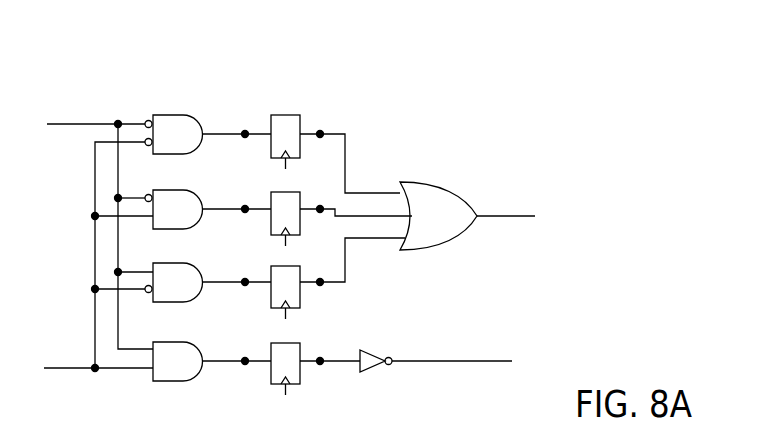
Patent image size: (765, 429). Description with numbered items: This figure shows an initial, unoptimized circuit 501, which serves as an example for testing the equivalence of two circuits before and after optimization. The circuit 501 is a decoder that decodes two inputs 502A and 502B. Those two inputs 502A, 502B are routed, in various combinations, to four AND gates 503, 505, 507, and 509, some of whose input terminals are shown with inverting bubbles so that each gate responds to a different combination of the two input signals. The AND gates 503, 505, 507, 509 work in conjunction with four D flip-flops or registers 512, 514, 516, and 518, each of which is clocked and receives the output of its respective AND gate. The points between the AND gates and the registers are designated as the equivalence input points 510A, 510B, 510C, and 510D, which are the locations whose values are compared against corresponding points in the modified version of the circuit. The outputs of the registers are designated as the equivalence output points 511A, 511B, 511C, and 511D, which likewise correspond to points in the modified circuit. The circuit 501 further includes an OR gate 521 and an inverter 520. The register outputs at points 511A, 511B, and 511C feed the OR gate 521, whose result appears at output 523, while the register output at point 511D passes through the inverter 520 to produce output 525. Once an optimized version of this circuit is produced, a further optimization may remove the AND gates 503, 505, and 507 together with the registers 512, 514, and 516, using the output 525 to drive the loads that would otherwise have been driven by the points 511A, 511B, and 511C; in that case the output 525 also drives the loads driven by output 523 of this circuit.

The circuit 501 is at (404, 68).
The input 502A is at (70, 370).
The input 502B is at (63, 124).
The AND gate 503 is at (194, 143).
The AND gate 505 is at (194, 218).
The AND gate 507 is at (194, 291).
The AND gate 509 is at (194, 370).
The equivalence input point 510A is at (245, 131).
The equivalence input point 510B is at (247, 206).
The equivalence input point 510C is at (247, 279).
The equivalence input point 510D is at (247, 358).
The equivalence output point 511A is at (321, 131).
The equivalence output point 511B is at (323, 196).
The equivalence output point 511C is at (321, 285).
The equivalence output point 511D is at (321, 364).
The D flip-flop 512 is at (271, 154).
The D flip-flop 514 is at (271, 231).
The D flip-flop 516 is at (271, 305).
The D flip-flop 518 is at (271, 380).
The inverter 520 is at (388, 357).
The OR gate 521 is at (455, 191).
The output 523 is at (516, 214).
The output 525 is at (481, 360).